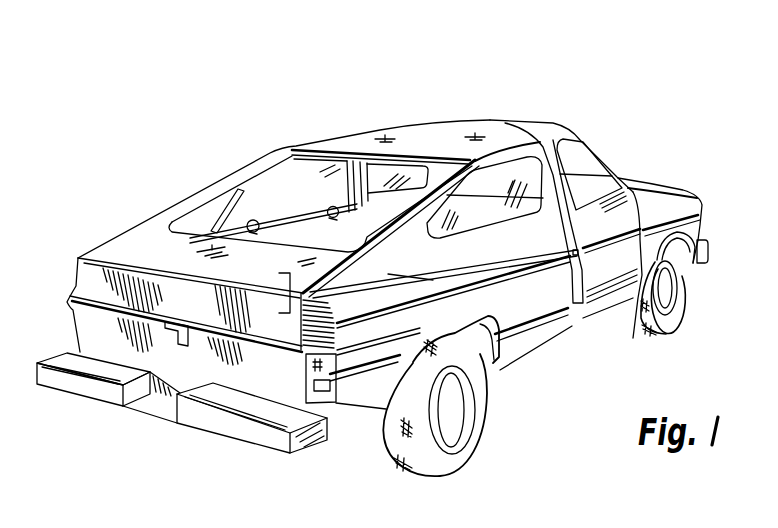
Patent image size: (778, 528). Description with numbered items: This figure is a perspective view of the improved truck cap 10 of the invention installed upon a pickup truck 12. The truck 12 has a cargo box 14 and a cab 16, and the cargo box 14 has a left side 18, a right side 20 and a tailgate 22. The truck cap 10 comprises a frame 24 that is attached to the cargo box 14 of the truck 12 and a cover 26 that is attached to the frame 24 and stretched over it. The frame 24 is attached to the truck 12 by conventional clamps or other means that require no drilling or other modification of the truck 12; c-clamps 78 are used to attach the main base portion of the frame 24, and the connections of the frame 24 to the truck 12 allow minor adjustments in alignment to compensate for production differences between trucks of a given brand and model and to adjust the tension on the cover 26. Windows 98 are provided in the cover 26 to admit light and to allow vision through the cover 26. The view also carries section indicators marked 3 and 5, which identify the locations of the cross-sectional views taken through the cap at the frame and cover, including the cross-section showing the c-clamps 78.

The truck cap 10 is at (357, 107).
The truck 12 is at (648, 186).
The cargo box 14 is at (472, 277).
The cab 16 is at (548, 128).
The left side 18 is at (77, 281).
The right side 20 is at (532, 252).
The tailgate 22 is at (267, 368).
The frame 24 is at (237, 229).
The cover 26 is at (418, 137).
The c-clamps 78 is at (330, 208).
The windows 98 is at (373, 195).
The section line 3- 3 is at (432, 281).
The section line 5- 5 is at (270, 313).